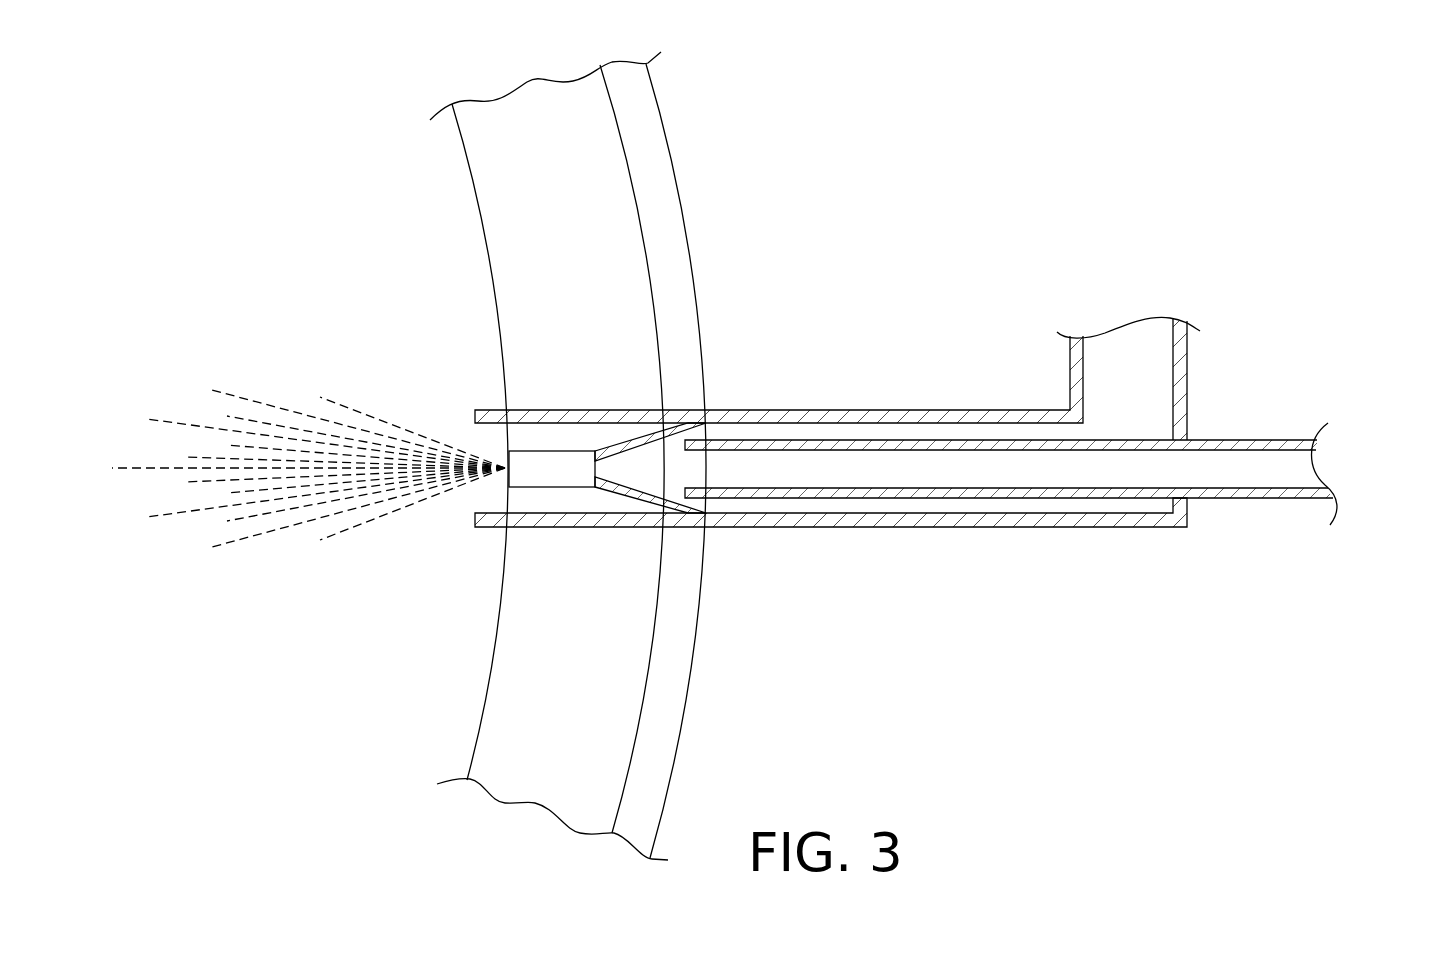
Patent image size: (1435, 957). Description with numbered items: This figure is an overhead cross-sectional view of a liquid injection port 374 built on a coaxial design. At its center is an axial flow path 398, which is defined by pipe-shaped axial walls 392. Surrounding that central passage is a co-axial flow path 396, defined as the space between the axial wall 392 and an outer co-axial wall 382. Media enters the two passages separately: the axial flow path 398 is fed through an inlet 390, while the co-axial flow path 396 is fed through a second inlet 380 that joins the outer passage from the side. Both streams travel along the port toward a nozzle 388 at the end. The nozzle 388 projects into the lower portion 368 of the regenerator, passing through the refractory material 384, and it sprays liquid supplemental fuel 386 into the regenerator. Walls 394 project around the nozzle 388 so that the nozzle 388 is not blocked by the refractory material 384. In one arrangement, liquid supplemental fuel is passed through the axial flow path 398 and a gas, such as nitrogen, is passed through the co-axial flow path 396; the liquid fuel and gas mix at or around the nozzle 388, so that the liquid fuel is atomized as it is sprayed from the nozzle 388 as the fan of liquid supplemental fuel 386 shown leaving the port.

The lower portion of the regenerator 368 is at (662, 160).
The liquid injection port 374 is at (428, 393).
The inlet 380 is at (1119, 300).
The co-axial wall 382 is at (909, 410).
The refractory material 384 is at (526, 121).
The liquid supplemental fuel 386 is at (393, 518).
The nozzle 388 is at (547, 451).
The inlet 390 is at (1370, 463).
The axial wall 392 is at (1222, 440).
The walls 394 is at (619, 410).
The co-axial flow path 396 is at (785, 432).
The axial flow path 398 is at (1245, 475).